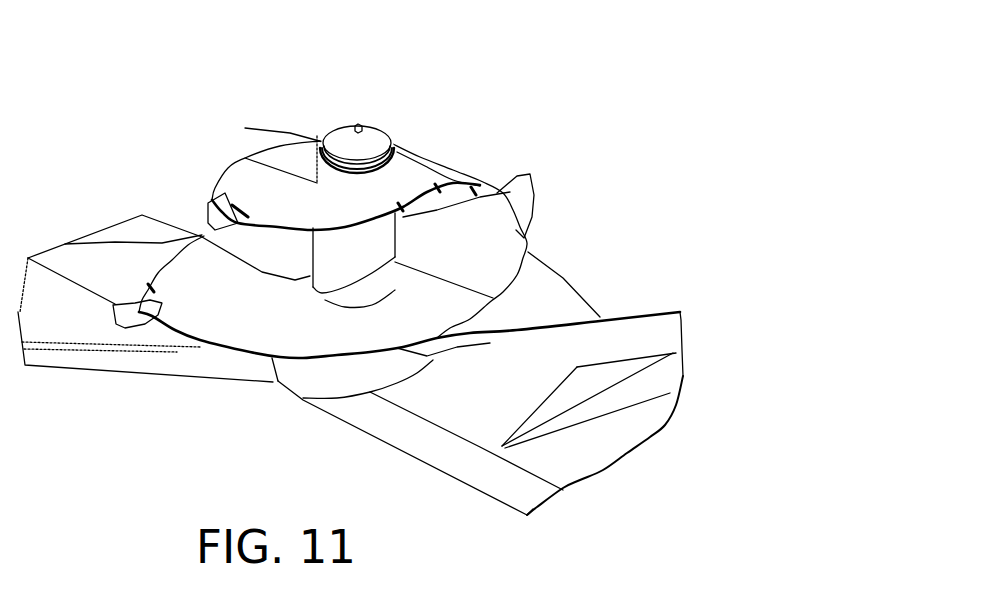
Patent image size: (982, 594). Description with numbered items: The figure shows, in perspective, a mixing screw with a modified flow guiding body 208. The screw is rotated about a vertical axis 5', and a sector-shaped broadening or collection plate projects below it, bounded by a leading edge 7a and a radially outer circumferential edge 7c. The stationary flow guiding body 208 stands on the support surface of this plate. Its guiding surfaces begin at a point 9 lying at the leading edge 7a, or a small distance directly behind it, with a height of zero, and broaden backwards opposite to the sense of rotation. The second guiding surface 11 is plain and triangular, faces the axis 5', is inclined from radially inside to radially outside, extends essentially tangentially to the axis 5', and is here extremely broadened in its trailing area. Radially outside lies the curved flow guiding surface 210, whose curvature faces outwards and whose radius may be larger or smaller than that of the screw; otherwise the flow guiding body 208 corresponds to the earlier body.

The vertical axis 5' is at (434, 87).
The leading edge 7a is at (388, 446).
The circumferential edge 7c is at (683, 342).
The point 9 is at (508, 460).
The second guiding surface 11 is at (598, 377).
The flow guiding body 208 is at (638, 369).
The curved flow guiding surface 210 is at (662, 390).